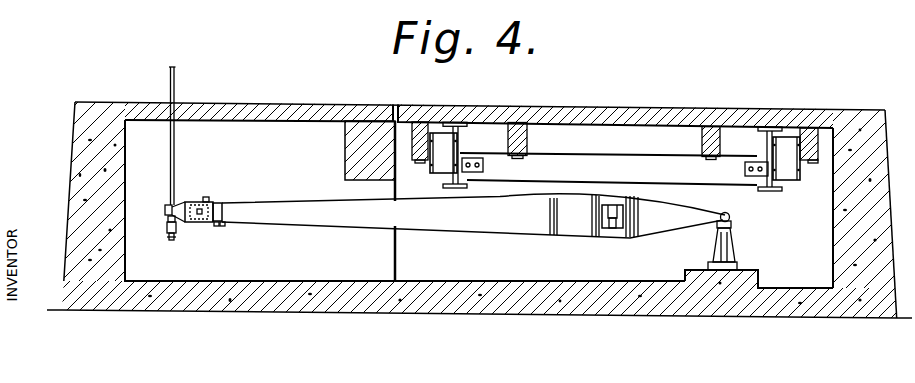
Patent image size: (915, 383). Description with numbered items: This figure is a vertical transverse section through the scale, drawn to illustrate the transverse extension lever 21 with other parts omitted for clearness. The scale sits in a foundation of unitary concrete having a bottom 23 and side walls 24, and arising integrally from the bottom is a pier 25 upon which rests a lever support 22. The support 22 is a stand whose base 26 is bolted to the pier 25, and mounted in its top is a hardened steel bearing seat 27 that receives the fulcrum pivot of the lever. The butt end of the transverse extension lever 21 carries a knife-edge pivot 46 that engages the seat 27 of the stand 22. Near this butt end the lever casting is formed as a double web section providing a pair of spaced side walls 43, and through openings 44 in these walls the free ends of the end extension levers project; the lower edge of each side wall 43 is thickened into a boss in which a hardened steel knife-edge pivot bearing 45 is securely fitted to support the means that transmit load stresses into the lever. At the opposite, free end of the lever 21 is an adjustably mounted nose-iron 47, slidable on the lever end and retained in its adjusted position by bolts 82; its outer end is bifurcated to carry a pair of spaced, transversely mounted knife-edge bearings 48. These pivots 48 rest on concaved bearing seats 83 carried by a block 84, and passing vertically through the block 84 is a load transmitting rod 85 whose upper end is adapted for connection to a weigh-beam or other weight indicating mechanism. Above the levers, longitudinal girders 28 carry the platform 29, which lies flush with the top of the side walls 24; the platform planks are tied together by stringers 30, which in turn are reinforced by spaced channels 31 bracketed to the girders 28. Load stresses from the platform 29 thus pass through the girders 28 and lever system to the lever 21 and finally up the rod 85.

The transverse extension lever 21 is at (473, 216).
The lever support 22 is at (734, 253).
The bottom 23 is at (531, 281).
The side wall 24 is at (80, 122).
The pier 25 is at (762, 278).
The base 26 is at (710, 265).
The bearing seat 27 is at (732, 234).
The longitudinal girder 28 is at (459, 140).
The platform 29 is at (592, 109).
The stringer 30 is at (527, 141).
The channel 31 is at (612, 169).
The side wall of lever casting 43 is at (612, 205).
The opening 44 is at (603, 216).
The knife-edge pivot bearing 45 is at (611, 229).
The knife-edge pivot 46 is at (731, 216).
The nose-iron 47 is at (215, 203).
The knife-edge bearing 48 is at (174, 206).
The bolt 82 is at (207, 199).
The concaved bearing seat 83 is at (177, 223).
The block 84 is at (170, 238).
The load transmitting rod 85 is at (176, 95).